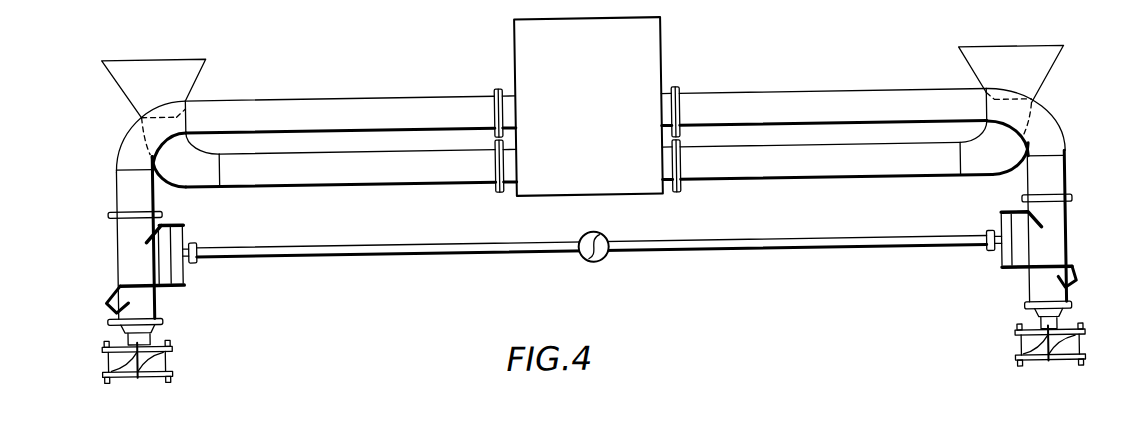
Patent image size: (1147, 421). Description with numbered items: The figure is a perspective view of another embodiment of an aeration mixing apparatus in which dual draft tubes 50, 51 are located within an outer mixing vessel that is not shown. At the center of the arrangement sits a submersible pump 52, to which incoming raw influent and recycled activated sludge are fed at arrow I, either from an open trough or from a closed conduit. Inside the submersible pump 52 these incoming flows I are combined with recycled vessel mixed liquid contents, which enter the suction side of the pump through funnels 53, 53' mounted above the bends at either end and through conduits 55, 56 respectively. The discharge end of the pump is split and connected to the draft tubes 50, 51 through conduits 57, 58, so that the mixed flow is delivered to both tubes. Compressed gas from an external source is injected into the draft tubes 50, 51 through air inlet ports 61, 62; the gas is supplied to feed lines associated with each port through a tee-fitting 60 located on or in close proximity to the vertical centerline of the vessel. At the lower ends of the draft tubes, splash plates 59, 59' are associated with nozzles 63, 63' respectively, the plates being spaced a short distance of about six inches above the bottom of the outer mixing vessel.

The draft tube 50 is at (155, 297).
The draft tube 51 is at (1030, 294).
The submersible pump 52 is at (513, 46).
The funnel 53 is at (178, 102).
The funnel 53' is at (1040, 84).
The conduit 55 is at (380, 174).
The conduit 56 is at (828, 170).
The conduit 57 is at (349, 100).
The conduit 58 is at (829, 99).
The splash plate 59 is at (176, 338).
The splash plate 59' is at (1012, 322).
The tee-fitting 60 is at (580, 236).
The air inlet port 61 is at (150, 235).
The air inlet port 62 is at (1058, 252).
The nozzle 63 is at (112, 362).
The nozzle 63' is at (1078, 344).
The incoming flows I is at (666, 42).